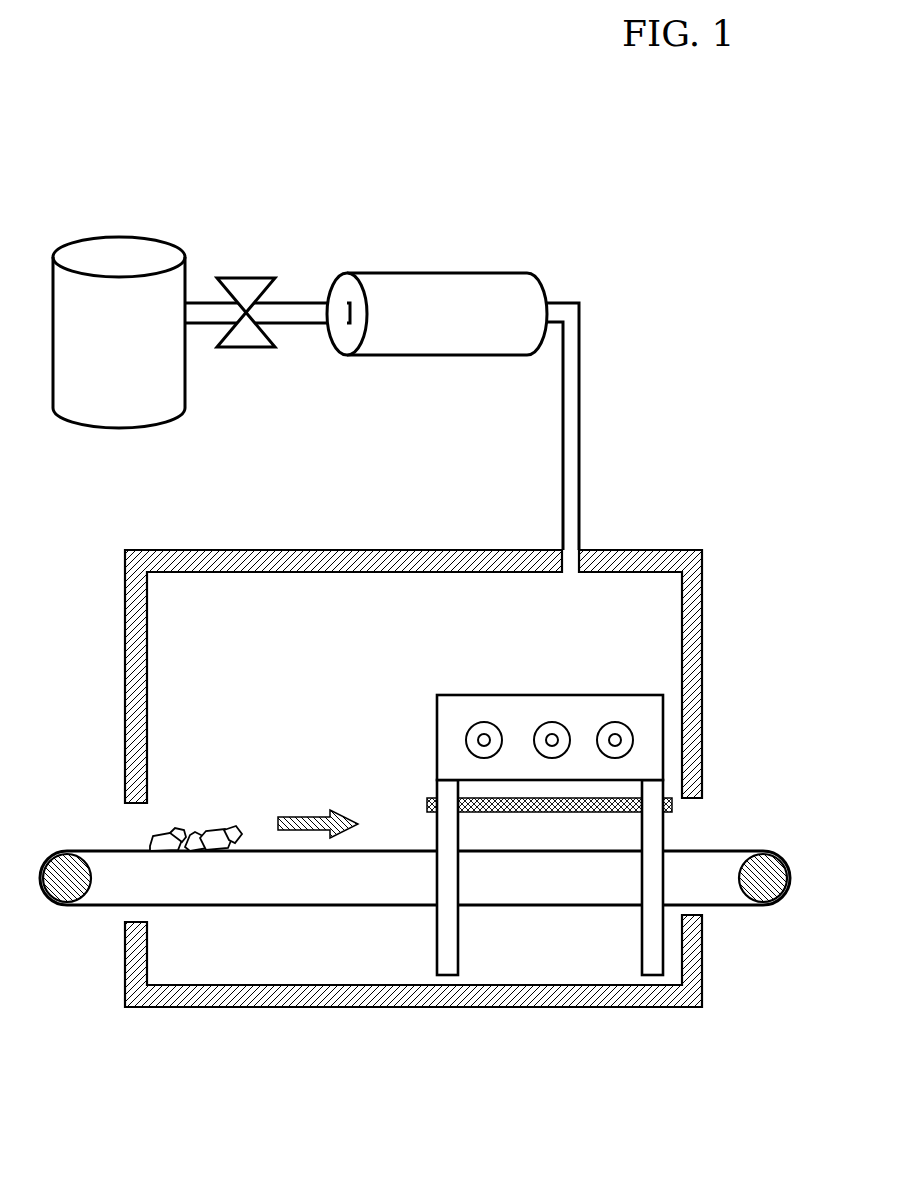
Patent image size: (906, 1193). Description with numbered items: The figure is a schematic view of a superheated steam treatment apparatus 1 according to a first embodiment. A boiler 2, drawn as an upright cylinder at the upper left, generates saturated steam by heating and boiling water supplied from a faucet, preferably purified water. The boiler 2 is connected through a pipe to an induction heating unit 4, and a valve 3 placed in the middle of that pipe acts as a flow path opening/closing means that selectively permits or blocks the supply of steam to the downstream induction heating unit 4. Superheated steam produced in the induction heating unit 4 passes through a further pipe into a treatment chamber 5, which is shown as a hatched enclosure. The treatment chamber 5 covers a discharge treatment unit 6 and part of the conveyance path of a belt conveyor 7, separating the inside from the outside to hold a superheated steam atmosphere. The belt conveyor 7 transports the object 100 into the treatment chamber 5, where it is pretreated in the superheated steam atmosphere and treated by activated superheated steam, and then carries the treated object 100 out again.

The superheated steam treatment apparatus 1 is at (452, 132).
The boiler 2 is at (137, 238).
The valve 3 is at (250, 278).
The induction heating unit 4 is at (430, 273).
The treatment chamber 5 is at (322, 552).
The discharge treatment unit 6 is at (536, 695).
The belt conveyor 7 is at (733, 850).
The object 100 is at (214, 810).